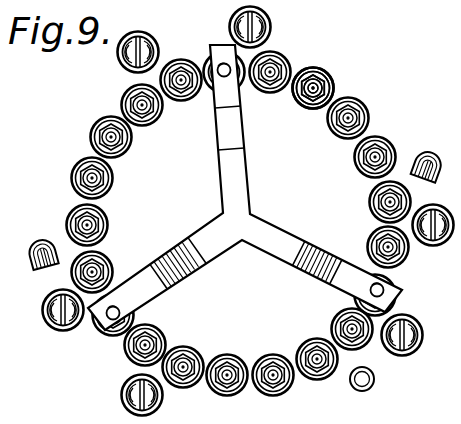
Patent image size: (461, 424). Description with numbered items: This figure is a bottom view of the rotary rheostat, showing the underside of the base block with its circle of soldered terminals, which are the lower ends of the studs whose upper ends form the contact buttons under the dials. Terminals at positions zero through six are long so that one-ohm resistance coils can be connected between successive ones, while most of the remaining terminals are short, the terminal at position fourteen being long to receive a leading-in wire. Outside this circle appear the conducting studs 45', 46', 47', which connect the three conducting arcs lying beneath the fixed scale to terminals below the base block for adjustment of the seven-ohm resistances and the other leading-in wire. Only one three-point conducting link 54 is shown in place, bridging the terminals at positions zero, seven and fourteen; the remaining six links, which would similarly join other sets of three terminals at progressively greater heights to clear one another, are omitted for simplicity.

The three-point conducting link 54 is at (233, 173).
The conducting stud 45' is at (433, 148).
The conducting stud 46' is at (369, 395).
The conducting stud 47' is at (35, 241).